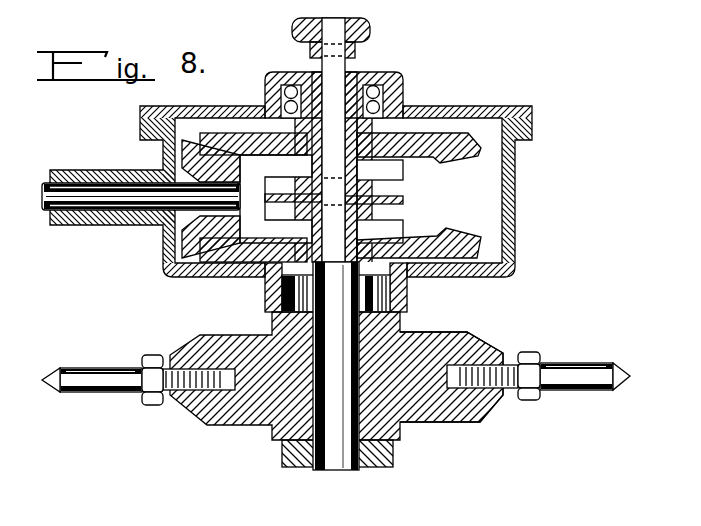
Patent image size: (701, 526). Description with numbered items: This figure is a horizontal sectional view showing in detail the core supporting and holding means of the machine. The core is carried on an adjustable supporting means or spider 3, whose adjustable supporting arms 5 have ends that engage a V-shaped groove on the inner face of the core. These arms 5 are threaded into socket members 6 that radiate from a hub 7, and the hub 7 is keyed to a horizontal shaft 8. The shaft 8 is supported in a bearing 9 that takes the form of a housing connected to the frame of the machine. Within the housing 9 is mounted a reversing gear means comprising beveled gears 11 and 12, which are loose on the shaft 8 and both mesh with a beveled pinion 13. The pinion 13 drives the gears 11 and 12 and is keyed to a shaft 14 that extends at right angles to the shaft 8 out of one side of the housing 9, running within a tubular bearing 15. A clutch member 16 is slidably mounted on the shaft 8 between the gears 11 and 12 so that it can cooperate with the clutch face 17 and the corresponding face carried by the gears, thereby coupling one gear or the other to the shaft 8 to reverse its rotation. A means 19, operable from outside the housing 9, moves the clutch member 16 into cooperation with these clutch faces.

The spider 3 is at (336, 389).
The adjustable supporting arms 5 is at (101, 392).
The socket members 6 is at (475, 422).
The hub 7 is at (272, 441).
The horizontal shaft 8 is at (343, 468).
The bearing 9 is at (461, 103).
The beveled gear 11 is at (448, 232).
The beveled gear 12 is at (437, 155).
The beveled pinion 13 is at (185, 152).
The shaft 14 is at (83, 222).
The tubular bearing 15 is at (64, 227).
The clutch member 16 is at (377, 178).
The clutch face 17 is at (297, 170).
The means operable exteriorly of the housing 19 is at (332, 62).